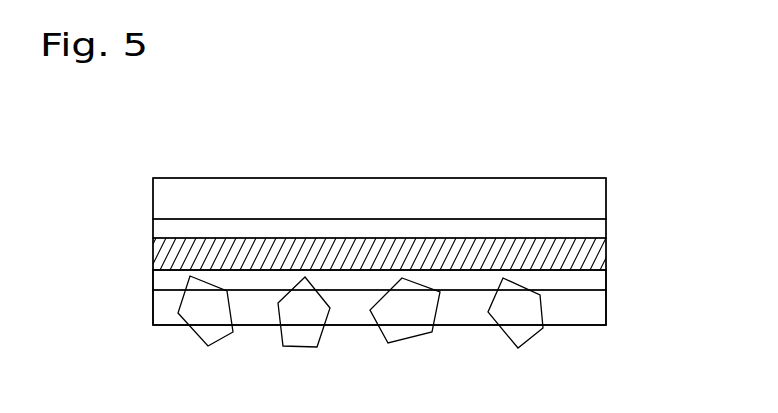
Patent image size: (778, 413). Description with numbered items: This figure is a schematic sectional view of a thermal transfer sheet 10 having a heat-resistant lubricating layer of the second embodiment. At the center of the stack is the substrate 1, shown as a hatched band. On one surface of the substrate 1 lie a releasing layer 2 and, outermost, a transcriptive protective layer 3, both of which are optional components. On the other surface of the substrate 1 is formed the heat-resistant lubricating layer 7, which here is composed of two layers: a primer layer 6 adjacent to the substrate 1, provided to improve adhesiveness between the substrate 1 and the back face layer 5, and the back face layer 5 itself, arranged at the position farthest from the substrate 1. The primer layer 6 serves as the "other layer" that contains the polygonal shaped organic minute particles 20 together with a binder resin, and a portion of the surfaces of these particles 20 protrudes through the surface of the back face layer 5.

The thermal transfer sheet 10 is at (549, 170).
The transcriptive protective layer 3 is at (575, 200).
The releasing layer 2 is at (575, 228).
The substrate 1 is at (606, 245).
The primer layer 6 is at (578, 280).
The back face layer 5 is at (575, 317).
The heat-resistant lubricating layer 7 is at (693, 260).
The polygonal shaped organic minute particle 20 is at (211, 313).